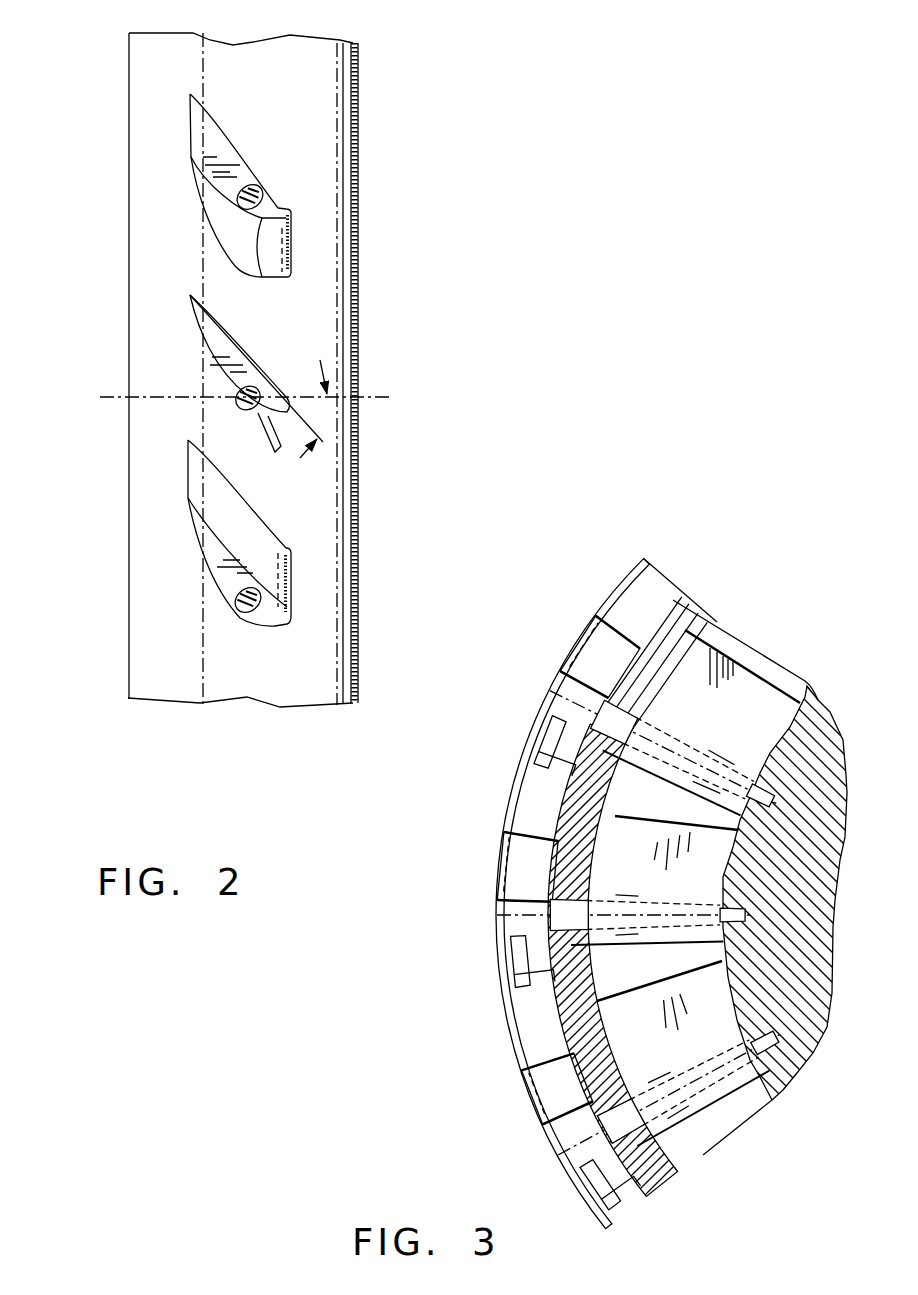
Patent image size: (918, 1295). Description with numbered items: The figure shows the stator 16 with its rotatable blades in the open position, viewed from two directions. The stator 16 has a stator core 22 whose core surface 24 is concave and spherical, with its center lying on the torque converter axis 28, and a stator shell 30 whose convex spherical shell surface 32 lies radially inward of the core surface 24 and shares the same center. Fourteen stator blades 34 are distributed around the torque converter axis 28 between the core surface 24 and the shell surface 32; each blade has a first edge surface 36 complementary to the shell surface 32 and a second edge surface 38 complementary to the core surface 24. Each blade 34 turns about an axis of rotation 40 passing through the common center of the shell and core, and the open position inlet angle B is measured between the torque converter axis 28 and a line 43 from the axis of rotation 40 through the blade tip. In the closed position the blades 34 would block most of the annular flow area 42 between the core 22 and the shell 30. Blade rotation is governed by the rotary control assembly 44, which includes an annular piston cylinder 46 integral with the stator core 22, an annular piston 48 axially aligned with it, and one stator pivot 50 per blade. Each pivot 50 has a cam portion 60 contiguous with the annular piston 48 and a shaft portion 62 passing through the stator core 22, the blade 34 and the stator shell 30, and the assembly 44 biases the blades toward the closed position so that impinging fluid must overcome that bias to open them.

In FIG. 2, the stator 16 is at (382, 245).
In FIG. 3, the stator 16 is at (481, 869).
In FIG. 3, the stator core 22 is at (691, 601).
In FIG. 3, the core surface 24 is at (720, 620).
In FIG. 2, the torque converter axis 28 is at (378, 397).
In FIG. 2, the stator shell 30 is at (145, 660).
In FIG. 3, the stator shell 30 is at (851, 785).
In FIG. 2, the shell surface 32 is at (173, 590).
In FIG. 3, the shell surface 32 is at (807, 688).
In FIG. 2, the stator blades 34 is at (284, 203).
In FIG. 3, the stator blades 34 is at (745, 690).
In FIG. 3, the first edge surface 36 is at (787, 737).
In FIG. 2, the second edge surface 38 is at (263, 218).
In FIG. 3, the second edge surface 38 is at (640, 590).
In FIG. 2, the axis of rotation 40 is at (262, 398).
In FIG. 3, the axis of rotation 40 is at (541, 686).
In FIG. 3, the annular flow area 42 is at (737, 1118).
In FIG. 2, the line 43 is at (326, 432).
In FIG. 2, the rotary control assembly 44 is at (254, 341).
In FIG. 3, the rotary control assembly 44 is at (496, 990).
In FIG. 3, the annular piston cylinder 46 is at (638, 560).
In FIG. 2, the annular piston 48 is at (203, 93).
In FIG. 3, the annular piston 48 is at (657, 593).
In FIG. 2, the stator pivots 50 is at (290, 358).
In FIG. 3, the stator pivots 50 is at (575, 621).
In FIG. 2, the cam portion 60 is at (271, 360).
In FIG. 3, the cam portion 60 is at (583, 647).
In FIG. 2, the shaft portion 62 is at (258, 188).
In FIG. 3, the shaft portion 62 is at (603, 727).